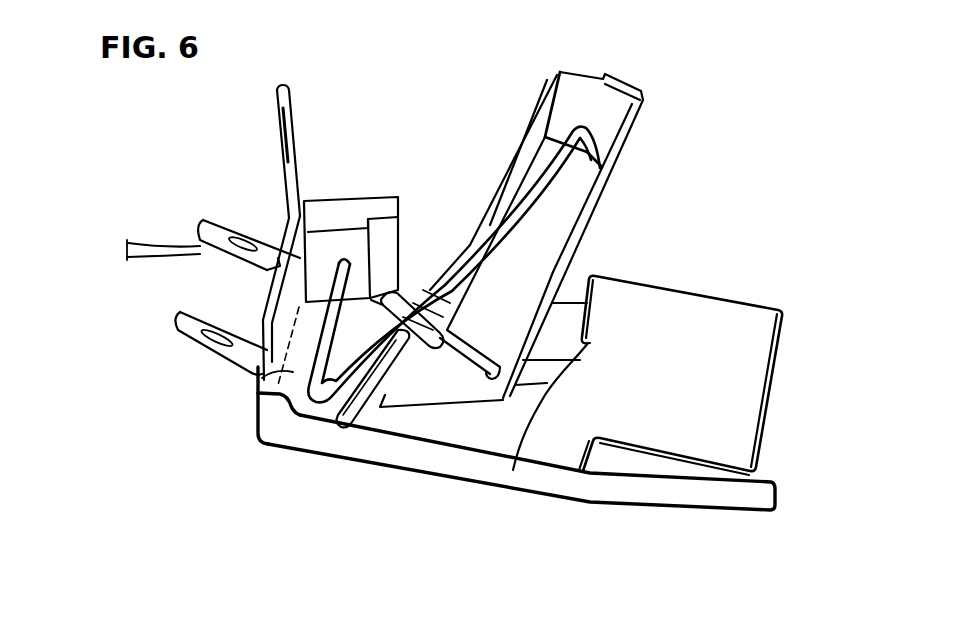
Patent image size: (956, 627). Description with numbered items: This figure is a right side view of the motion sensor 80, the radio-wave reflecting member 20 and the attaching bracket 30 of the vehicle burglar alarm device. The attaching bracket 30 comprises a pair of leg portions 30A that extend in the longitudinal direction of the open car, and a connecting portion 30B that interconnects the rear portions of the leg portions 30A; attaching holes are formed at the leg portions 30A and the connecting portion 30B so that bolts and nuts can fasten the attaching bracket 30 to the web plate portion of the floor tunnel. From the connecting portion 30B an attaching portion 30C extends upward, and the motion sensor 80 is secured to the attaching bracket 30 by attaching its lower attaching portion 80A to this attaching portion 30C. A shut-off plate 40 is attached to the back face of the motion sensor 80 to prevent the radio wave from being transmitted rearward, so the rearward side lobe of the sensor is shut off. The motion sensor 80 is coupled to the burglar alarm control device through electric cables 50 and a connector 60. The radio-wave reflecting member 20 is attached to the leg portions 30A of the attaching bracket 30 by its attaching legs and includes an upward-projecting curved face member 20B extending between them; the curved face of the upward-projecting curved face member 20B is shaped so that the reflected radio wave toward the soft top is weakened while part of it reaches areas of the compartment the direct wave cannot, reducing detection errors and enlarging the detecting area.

The radio-wave reflecting member 20 is at (708, 296).
The upward-projecting curved face member 20B is at (720, 370).
The attaching bracket 30 is at (170, 309).
The leg portions 30A is at (656, 492).
The connecting portion 30B is at (262, 383).
The attaching portion 30C is at (342, 420).
The shut-off plate 40 is at (523, 148).
The electric cables 50 is at (468, 258).
The connector 60 is at (353, 213).
The motion sensor 80 is at (647, 79).
The lower attaching portion 80A is at (424, 390).